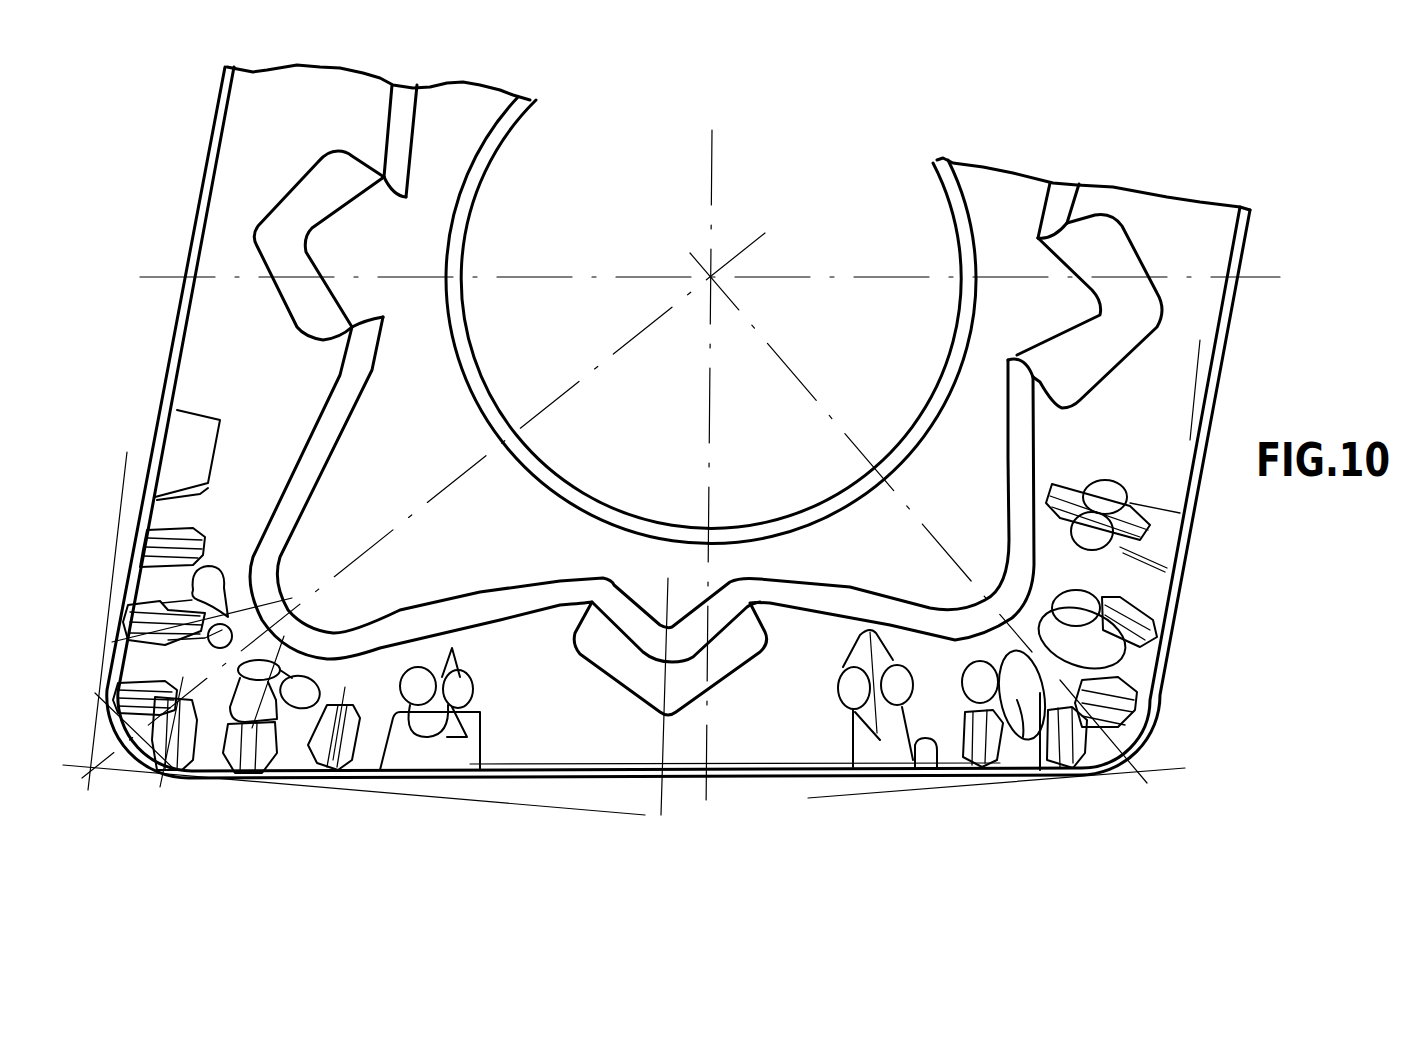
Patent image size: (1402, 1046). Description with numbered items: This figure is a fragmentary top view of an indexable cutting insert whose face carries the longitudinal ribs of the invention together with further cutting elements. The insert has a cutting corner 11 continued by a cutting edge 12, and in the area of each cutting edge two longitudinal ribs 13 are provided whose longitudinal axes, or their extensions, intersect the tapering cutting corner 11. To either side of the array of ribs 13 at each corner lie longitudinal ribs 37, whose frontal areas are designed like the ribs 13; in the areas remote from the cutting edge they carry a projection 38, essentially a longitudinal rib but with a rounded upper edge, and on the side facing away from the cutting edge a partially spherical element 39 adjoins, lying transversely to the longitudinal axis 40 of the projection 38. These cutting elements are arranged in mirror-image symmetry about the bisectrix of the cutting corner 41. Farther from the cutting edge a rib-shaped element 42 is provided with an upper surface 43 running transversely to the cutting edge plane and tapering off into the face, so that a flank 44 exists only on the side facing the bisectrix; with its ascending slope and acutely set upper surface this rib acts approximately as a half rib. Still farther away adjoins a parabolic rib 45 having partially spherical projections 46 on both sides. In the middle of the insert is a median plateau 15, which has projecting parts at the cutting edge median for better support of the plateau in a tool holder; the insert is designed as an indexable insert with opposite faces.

The cutting corner 11 is at (134, 794).
The cutting edge 12 is at (767, 781).
The longitudinal rib 13 is at (1147, 716).
The median plateau 15 is at (990, 483).
The longitudinal rib 37 is at (1133, 591).
The projection 38 is at (997, 640).
The partially spherical element 39 is at (1062, 594).
The longitudinal axis 40 is at (1135, 668).
The bisectrix of the cutting corner 41 is at (822, 412).
The rib-shaped element 42 is at (1147, 476).
The upper surface 43 is at (472, 735).
The flank 44 is at (392, 722).
The parabolic rib 45 is at (855, 655).
The partially spherical projection 46 is at (407, 687).